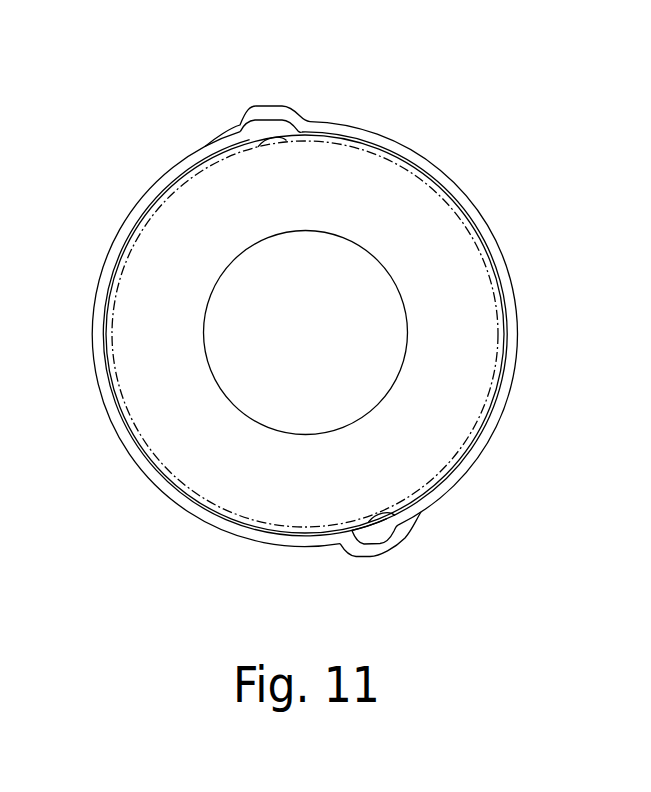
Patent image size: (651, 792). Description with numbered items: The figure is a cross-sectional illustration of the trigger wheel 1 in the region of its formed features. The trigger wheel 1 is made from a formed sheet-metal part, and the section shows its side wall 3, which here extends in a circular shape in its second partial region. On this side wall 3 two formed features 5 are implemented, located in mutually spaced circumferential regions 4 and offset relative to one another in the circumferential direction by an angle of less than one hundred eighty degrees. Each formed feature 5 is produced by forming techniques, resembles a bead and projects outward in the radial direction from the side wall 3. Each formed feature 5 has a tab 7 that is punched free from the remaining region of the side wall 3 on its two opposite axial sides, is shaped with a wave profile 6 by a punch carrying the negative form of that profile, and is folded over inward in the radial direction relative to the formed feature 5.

The trigger wheel 1 is at (160, 380).
The side wall 3 is at (158, 186).
The circumferential regions 4 is at (262, 160).
The formed feature 5 is at (288, 111).
The wave profile 6 is at (285, 133).
The tab 7 is at (305, 334).